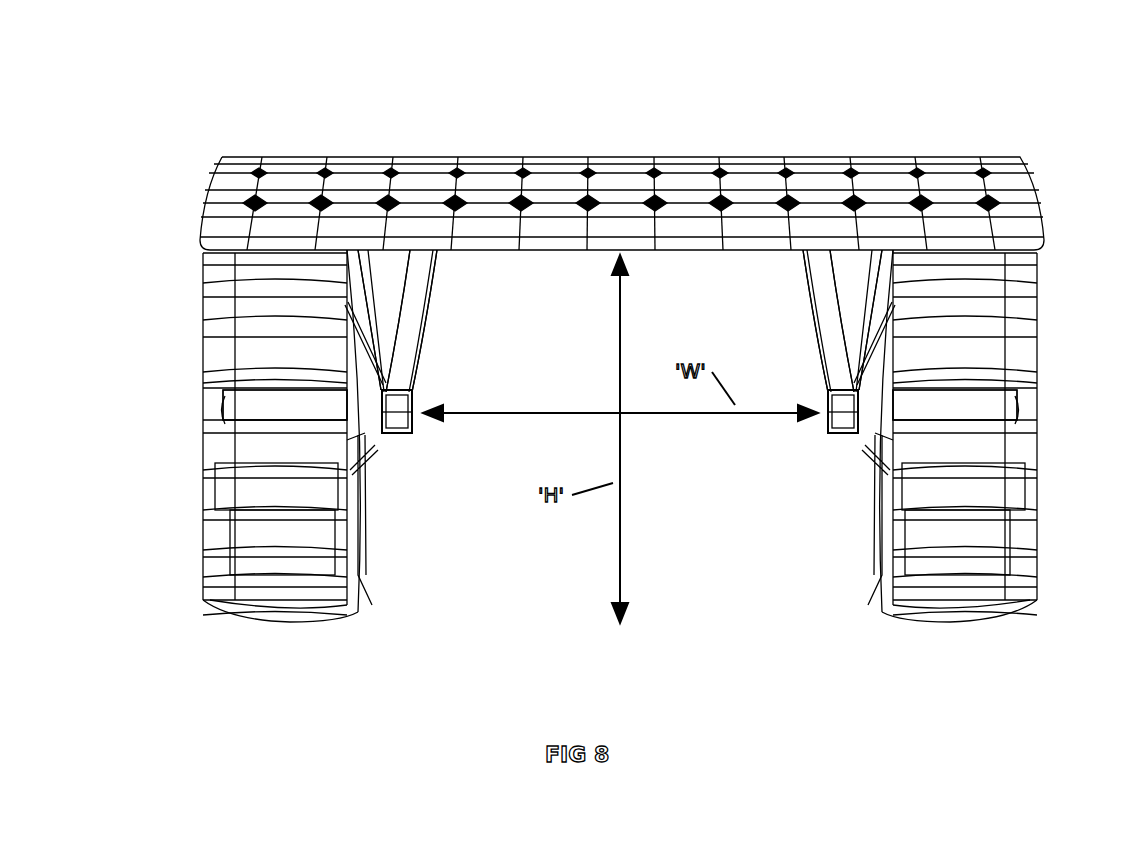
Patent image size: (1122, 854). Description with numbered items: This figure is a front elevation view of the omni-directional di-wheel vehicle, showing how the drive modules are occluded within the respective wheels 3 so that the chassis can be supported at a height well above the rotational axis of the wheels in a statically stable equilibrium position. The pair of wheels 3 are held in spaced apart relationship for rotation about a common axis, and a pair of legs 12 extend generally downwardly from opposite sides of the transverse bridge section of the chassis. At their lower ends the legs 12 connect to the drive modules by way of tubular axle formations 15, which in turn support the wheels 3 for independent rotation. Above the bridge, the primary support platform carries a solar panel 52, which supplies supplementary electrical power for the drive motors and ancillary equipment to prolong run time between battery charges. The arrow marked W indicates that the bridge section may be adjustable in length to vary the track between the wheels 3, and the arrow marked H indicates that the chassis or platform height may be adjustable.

The solar panel 52 is at (533, 107).
The wheels 3 is at (365, 600).
The tubular axle formations 15 is at (247, 405).
The legs 12 is at (413, 318).